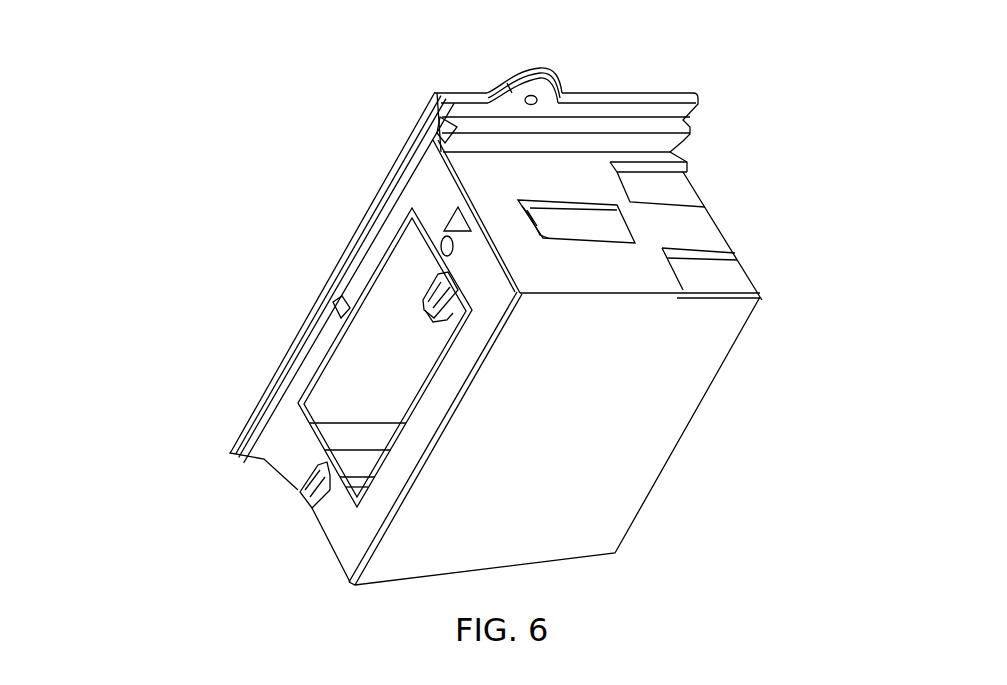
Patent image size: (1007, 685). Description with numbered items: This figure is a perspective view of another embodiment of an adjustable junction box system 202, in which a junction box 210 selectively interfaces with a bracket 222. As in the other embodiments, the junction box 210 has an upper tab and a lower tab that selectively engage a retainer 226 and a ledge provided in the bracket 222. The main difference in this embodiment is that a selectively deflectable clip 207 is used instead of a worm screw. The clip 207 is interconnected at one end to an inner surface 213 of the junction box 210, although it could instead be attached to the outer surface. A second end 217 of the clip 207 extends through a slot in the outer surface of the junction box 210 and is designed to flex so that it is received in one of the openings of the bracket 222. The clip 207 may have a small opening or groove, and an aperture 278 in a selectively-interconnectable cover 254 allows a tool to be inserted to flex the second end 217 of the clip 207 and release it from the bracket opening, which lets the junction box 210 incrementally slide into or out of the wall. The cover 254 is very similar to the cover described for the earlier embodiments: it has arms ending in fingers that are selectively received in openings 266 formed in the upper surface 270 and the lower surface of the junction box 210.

The adjustable junction box system 202 is at (766, 190).
The selectively deflectable clip 207 is at (447, 313).
The junction box 210 is at (585, 398).
The inner surface 213 is at (353, 367).
The second end 217 is at (423, 305).
The bracket 222 is at (612, 121).
The retainer 226 is at (668, 140).
The selectively-interconnectable cover 254 is at (295, 458).
The openings 266 is at (528, 214).
The upper surface 270 is at (625, 277).
The aperture 278 is at (343, 290).